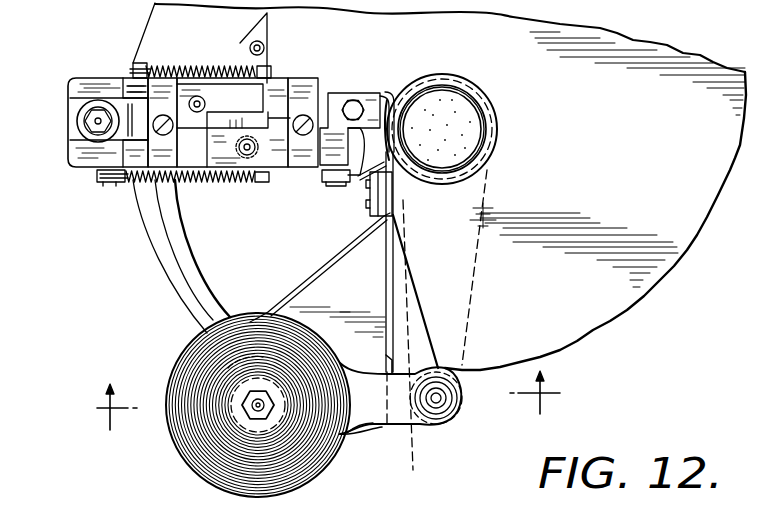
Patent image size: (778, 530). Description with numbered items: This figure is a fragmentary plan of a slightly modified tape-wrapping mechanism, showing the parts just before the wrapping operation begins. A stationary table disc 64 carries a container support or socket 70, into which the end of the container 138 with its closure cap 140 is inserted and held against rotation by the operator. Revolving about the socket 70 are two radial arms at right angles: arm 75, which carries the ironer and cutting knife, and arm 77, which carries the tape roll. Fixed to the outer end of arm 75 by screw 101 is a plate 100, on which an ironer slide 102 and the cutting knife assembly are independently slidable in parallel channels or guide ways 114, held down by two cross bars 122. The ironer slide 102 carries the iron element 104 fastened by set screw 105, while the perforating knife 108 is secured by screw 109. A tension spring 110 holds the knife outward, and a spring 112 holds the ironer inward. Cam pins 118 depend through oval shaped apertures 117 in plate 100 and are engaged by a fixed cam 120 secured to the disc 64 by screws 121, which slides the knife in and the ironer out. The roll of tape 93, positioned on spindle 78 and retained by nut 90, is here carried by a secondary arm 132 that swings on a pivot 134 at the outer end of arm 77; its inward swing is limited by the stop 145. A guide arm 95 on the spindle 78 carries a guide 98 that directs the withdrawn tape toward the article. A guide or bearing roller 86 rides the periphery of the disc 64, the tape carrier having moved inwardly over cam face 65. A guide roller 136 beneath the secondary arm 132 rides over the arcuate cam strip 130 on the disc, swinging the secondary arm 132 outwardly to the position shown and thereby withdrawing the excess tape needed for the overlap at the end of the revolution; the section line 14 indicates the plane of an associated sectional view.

The section line 14- 14 is at (316, 408).
The table disc 64 is at (643, 260).
The cam face 65 is at (408, 413).
The container support or socket 70 is at (490, 97).
The arm 75 is at (117, 83).
The arm 77 is at (480, 322).
The spindle 78 is at (247, 402).
The guide or bearing roller 86 is at (407, 346).
The nut 90 is at (263, 423).
The roll of tape 93 is at (318, 268).
The guide arm 95 is at (393, 273).
The guide 98 is at (385, 190).
The plate 100 is at (78, 165).
The screw 101 is at (98, 117).
The ironer slide 102 is at (132, 82).
The iron element 104 is at (383, 93).
The set screw 105 is at (355, 100).
The perforating knife 108 is at (365, 178).
The screw 109 is at (332, 180).
The tension spring 110 is at (223, 180).
The spring 112 is at (207, 65).
The channels or guide ways 114 is at (72, 140).
The oval shaped apertures 117 is at (282, 132).
The cam pins 118 is at (198, 115).
The fixed cam 120 is at (260, 32).
The screws 121 is at (252, 45).
The cross bars 122 is at (310, 93).
The arcuate cam strip 130 is at (183, 272).
The secondary arm 132 is at (370, 417).
The pivot 134 is at (437, 410).
The guide roller 136 is at (243, 427).
The container 138 is at (493, 125).
The closure cap 140 is at (490, 153).
The stop 145 is at (390, 360).